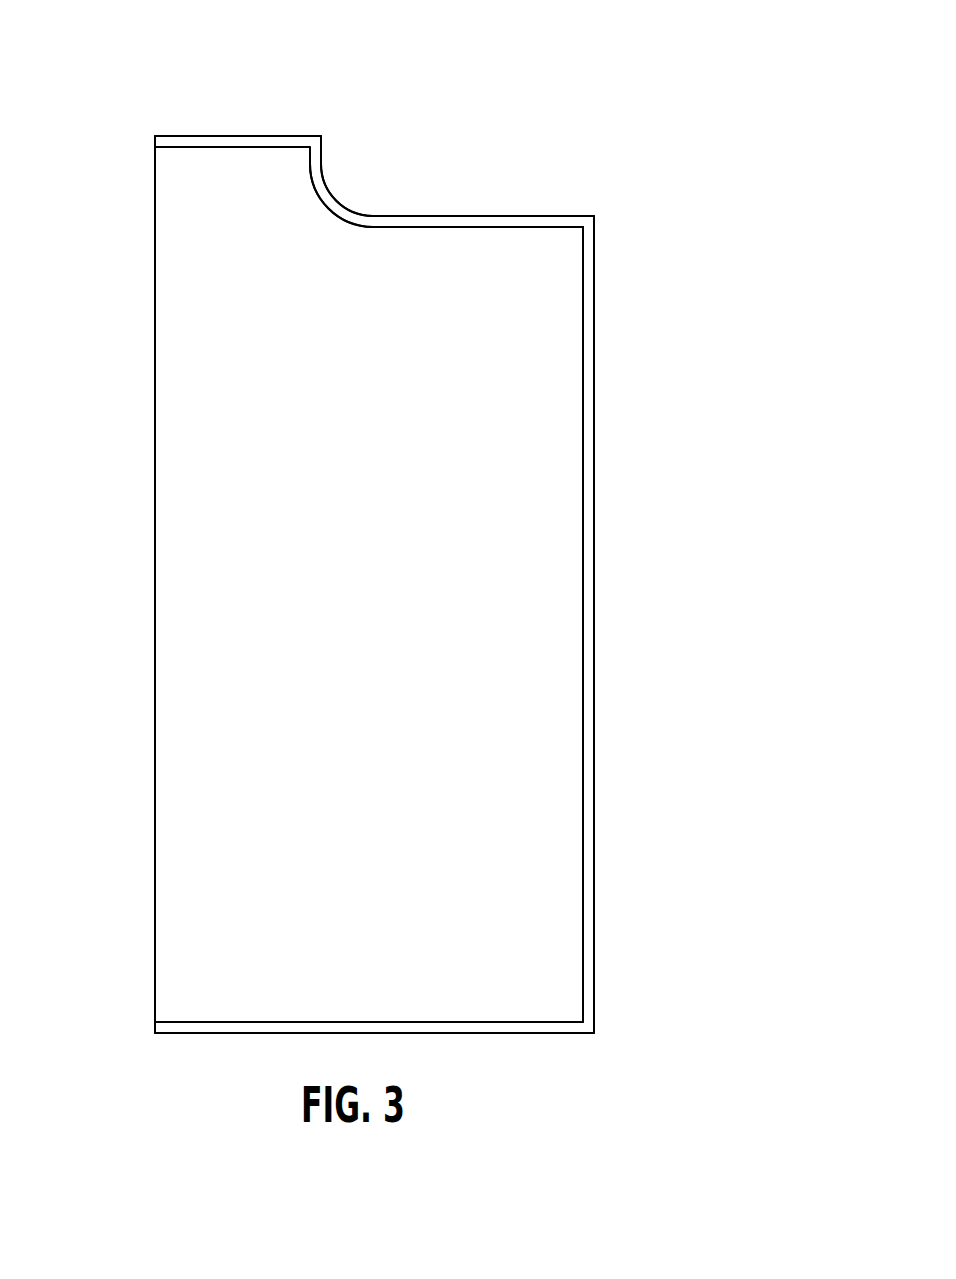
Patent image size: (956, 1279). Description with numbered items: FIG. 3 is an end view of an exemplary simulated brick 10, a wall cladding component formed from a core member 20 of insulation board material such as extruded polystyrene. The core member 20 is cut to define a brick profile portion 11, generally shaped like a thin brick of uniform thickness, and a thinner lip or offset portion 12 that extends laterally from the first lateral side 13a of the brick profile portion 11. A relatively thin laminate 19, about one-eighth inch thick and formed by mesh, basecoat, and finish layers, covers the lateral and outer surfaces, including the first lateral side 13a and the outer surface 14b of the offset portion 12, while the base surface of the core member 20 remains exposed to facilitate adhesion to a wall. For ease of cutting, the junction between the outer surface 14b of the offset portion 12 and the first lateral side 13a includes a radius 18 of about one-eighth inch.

The simulated brick 10 is at (515, 50).
The brick profile portion 11 is at (485, 839).
The offset portion 12 is at (235, 182).
The first lateral side 13a is at (524, 216).
The outer surface 14b is at (322, 155).
The radius 18 is at (340, 202).
The laminate 19 is at (583, 503).
The core member 20 is at (247, 707).